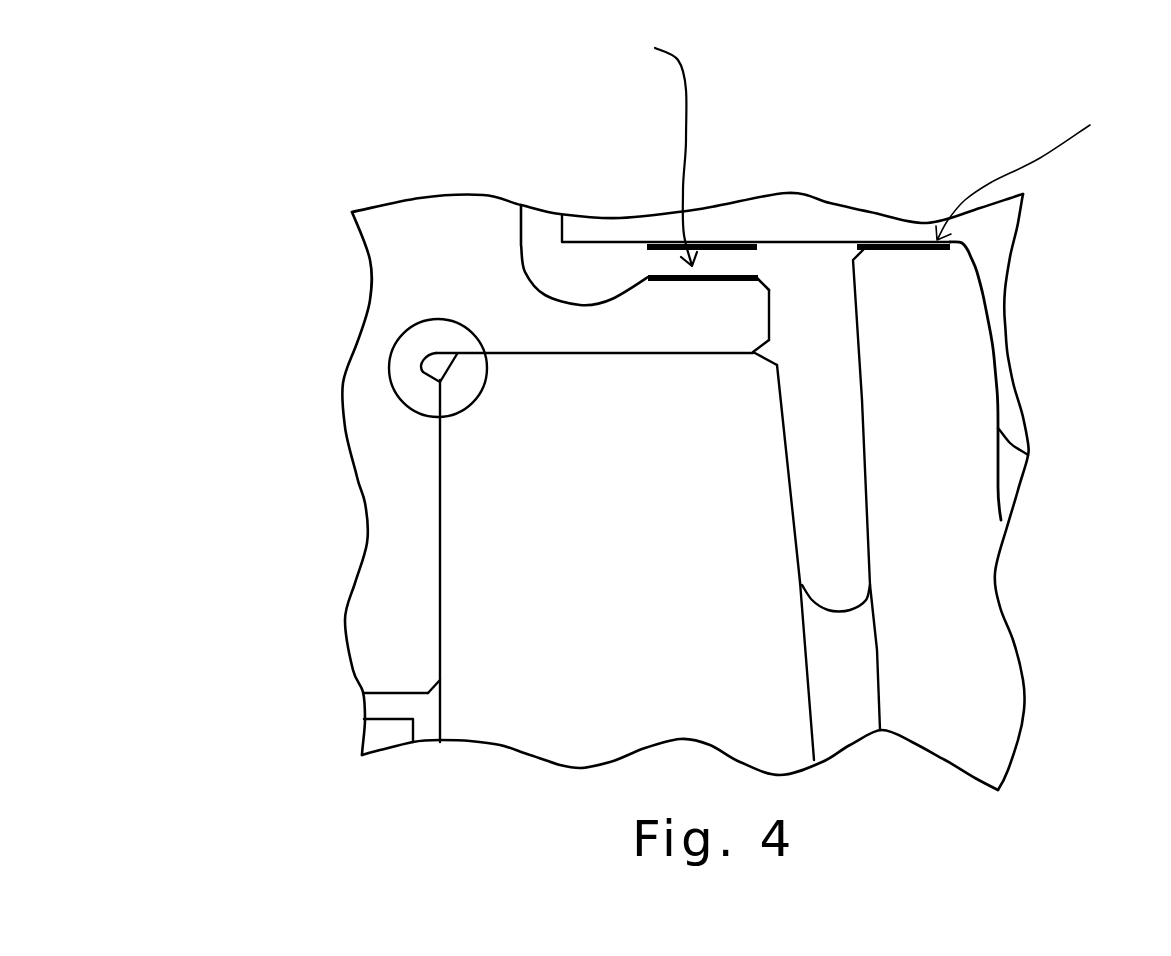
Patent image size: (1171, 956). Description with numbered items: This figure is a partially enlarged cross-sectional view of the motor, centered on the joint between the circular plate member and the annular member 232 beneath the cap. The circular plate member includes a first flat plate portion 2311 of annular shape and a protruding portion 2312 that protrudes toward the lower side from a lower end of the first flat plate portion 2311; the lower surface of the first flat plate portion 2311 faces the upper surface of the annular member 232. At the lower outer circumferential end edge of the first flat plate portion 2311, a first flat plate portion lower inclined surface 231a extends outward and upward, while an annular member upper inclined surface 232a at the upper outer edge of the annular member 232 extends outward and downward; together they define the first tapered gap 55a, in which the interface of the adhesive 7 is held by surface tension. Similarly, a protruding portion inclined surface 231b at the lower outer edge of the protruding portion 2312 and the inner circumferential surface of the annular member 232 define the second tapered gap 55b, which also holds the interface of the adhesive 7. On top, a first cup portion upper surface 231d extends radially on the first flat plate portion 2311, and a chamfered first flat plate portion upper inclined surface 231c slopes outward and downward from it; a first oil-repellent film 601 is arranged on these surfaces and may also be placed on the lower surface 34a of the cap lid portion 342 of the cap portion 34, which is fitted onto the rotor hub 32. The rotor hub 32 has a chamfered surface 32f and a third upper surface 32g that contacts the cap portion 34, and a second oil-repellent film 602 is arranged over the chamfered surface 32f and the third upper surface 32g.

The first flat plate portion 2311 is at (427, 248).
The protruding portion 2312 is at (400, 525).
The annular member 232 is at (660, 593).
The adhesive 7 is at (572, 372).
The cap lid portion 342 is at (820, 49).
The lower surface of the cap lid portion 34a is at (702, 243).
The first cup portion upper surface 231d is at (673, 276).
The first flat plate portion upper inclined surface 231c is at (763, 278).
The first oil-repellent film 601 is at (640, 66).
The first flat plate portion lower inclined surface 231a is at (758, 334).
The first tapered gap 55a is at (782, 362).
The annular member upper inclined surface 232a is at (763, 372).
The rotor hub 32 is at (1003, 47).
The chamfered surface 32f is at (854, 255).
The third upper surface 32g is at (905, 242).
The second oil-repellent film 602 is at (1137, 126).
The cap portion 34 is at (1000, 232).
The protruding portion inclined surface 231b is at (437, 683).
The second tapered gap 55b is at (439, 705).